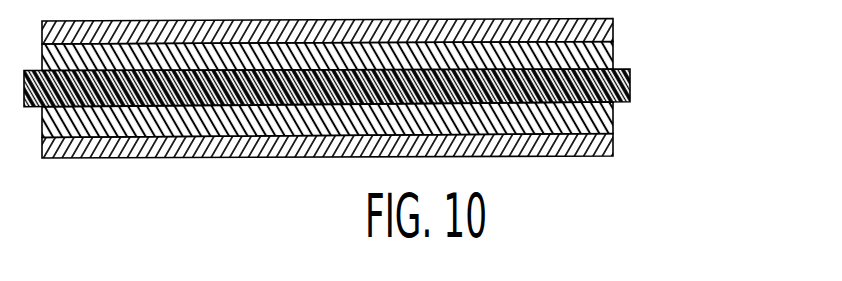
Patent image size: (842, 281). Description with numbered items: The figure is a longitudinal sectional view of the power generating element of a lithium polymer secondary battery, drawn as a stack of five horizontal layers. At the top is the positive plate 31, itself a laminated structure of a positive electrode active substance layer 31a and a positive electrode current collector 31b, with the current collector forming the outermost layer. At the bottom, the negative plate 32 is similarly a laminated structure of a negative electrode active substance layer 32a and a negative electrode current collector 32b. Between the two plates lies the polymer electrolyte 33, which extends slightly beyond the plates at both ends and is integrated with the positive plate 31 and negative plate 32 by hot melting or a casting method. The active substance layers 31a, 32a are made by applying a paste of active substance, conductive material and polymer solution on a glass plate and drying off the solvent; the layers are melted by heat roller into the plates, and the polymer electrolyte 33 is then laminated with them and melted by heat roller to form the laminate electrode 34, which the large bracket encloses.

The positive plate 31 is at (405, 40).
The positive electrode active substance layer 31a is at (614, 58).
The positive electrode current collector 31b is at (614, 31).
The negative plate 32 is at (405, 134).
The negative electrode active substance layer 32a is at (614, 117).
The negative electrode current collector 32b is at (614, 142).
The polymer electrolyte 33 is at (631, 82).
The laminate electrode 34 is at (421, 87).